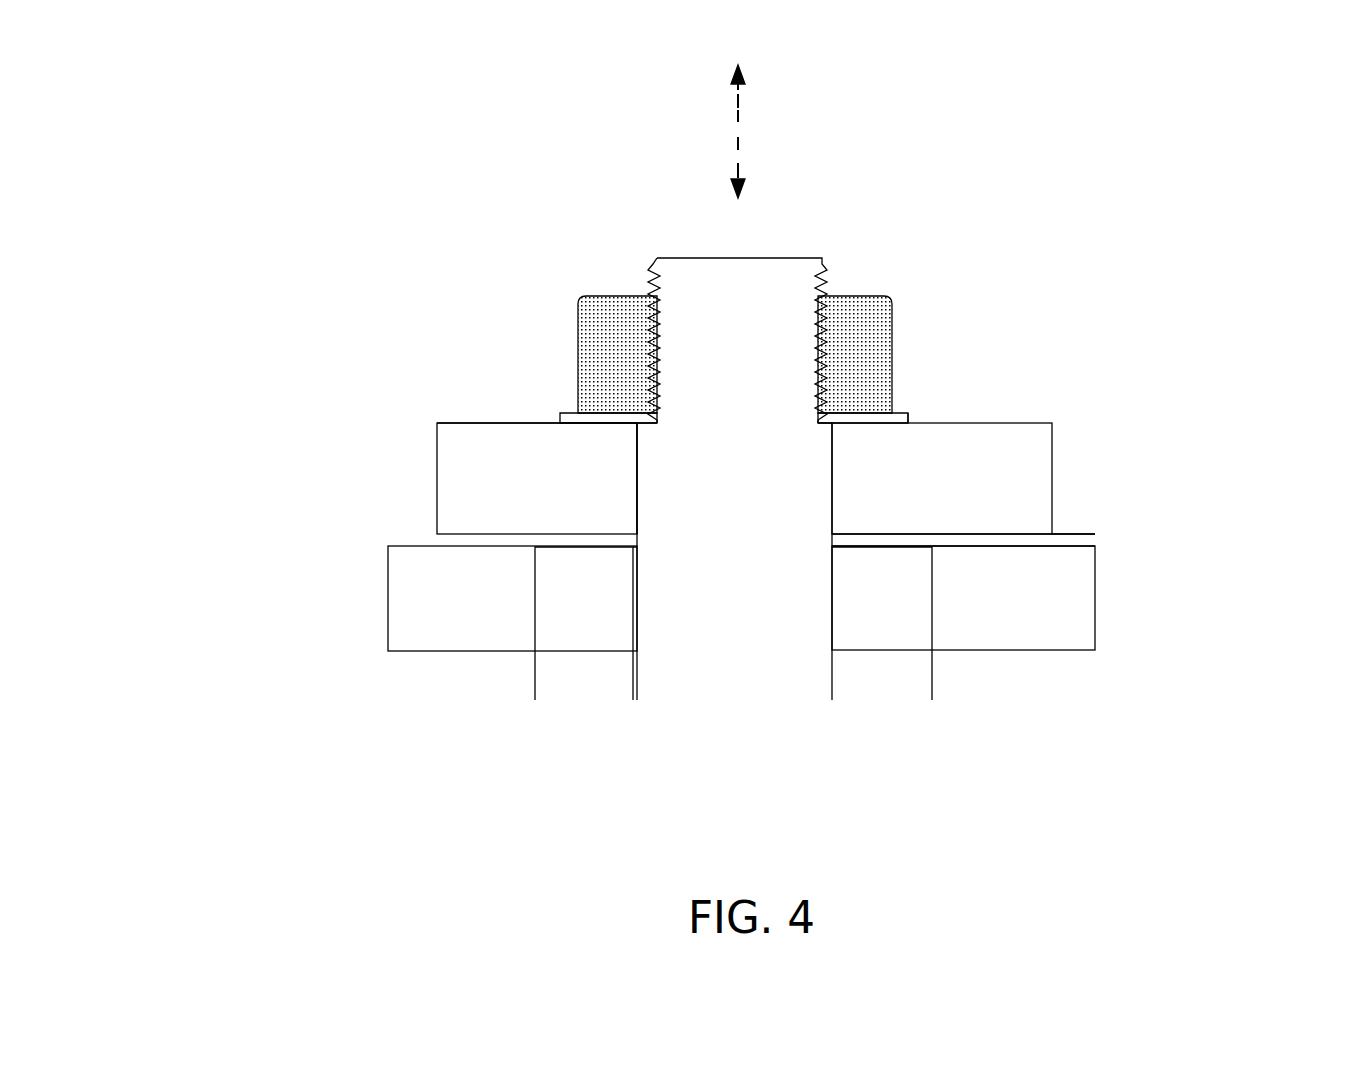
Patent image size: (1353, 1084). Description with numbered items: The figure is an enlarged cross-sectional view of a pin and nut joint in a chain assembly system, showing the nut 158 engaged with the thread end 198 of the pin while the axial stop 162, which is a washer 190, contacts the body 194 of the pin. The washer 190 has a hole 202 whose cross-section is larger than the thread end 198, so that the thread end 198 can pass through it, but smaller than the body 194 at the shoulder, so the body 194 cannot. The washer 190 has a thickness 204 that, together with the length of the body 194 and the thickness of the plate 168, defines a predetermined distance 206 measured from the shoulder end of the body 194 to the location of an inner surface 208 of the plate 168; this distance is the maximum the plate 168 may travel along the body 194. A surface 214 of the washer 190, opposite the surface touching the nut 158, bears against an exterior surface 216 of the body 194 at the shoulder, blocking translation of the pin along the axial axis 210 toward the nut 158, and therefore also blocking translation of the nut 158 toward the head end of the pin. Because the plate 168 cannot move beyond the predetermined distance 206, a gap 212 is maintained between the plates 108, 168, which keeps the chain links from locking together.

The plate 108 is at (1060, 636).
The nut 158 is at (607, 348).
The axial stop 162 is at (298, 286).
The plate 168 is at (1012, 448).
The washer 190 is at (588, 418).
The body 194 is at (662, 657).
The thread end 198 is at (722, 272).
The hole 202 is at (824, 428).
The thickness 204 is at (977, 447).
The predetermined distance 206 is at (740, 423).
The inner surface 208 is at (455, 651).
The axial axis 210 is at (738, 118).
The gap 212 is at (1127, 572).
The surface 214 is at (620, 425).
The exterior surface 216 is at (647, 422).